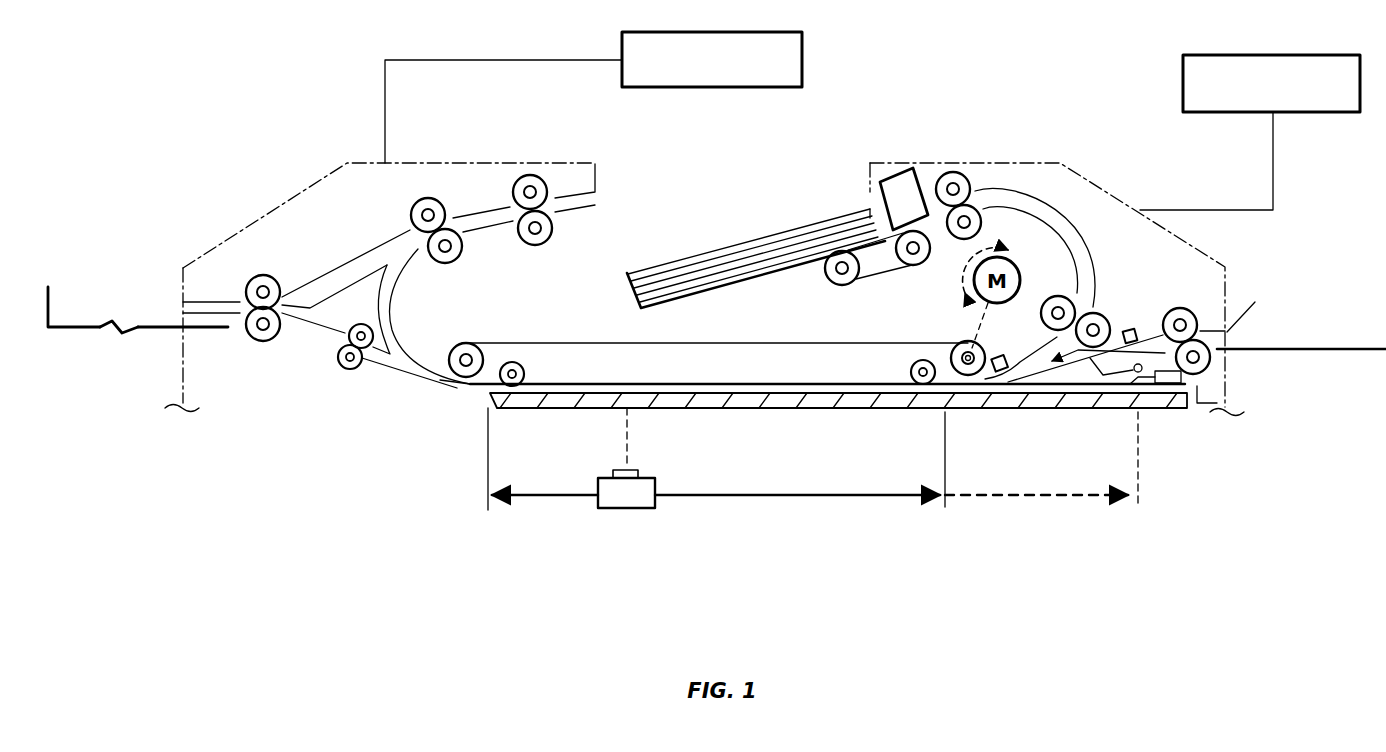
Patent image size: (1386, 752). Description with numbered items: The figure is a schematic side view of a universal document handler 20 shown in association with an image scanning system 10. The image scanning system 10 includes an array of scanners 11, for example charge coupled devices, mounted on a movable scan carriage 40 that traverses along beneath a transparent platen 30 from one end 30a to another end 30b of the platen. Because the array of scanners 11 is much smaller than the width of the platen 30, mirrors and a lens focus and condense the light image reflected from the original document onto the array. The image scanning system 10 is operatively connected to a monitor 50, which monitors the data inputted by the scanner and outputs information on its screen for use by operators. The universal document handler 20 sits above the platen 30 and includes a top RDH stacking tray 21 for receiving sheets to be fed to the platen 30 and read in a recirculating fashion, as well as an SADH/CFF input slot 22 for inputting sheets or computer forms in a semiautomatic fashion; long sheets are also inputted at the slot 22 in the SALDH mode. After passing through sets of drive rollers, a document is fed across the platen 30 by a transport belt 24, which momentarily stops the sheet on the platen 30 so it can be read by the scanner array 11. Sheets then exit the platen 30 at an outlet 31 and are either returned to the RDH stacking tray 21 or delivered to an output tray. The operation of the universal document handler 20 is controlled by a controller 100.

The image scanning system 10 is at (578, 534).
The array of scanners 11 is at (625, 468).
The universal document handler 20 is at (566, 124).
The RDH stacking tray 21 is at (747, 278).
The SADH/CFF input slot 22 is at (1256, 331).
The transport belt 24 is at (848, 380).
The platen 30 is at (670, 412).
The one end of platen 30a is at (1130, 412).
The another end of platen 30b is at (498, 410).
The outlet 31 is at (462, 385).
The movable scan carriage 40 is at (623, 510).
The monitor 50 is at (750, 87).
The controller 100 is at (1312, 112).